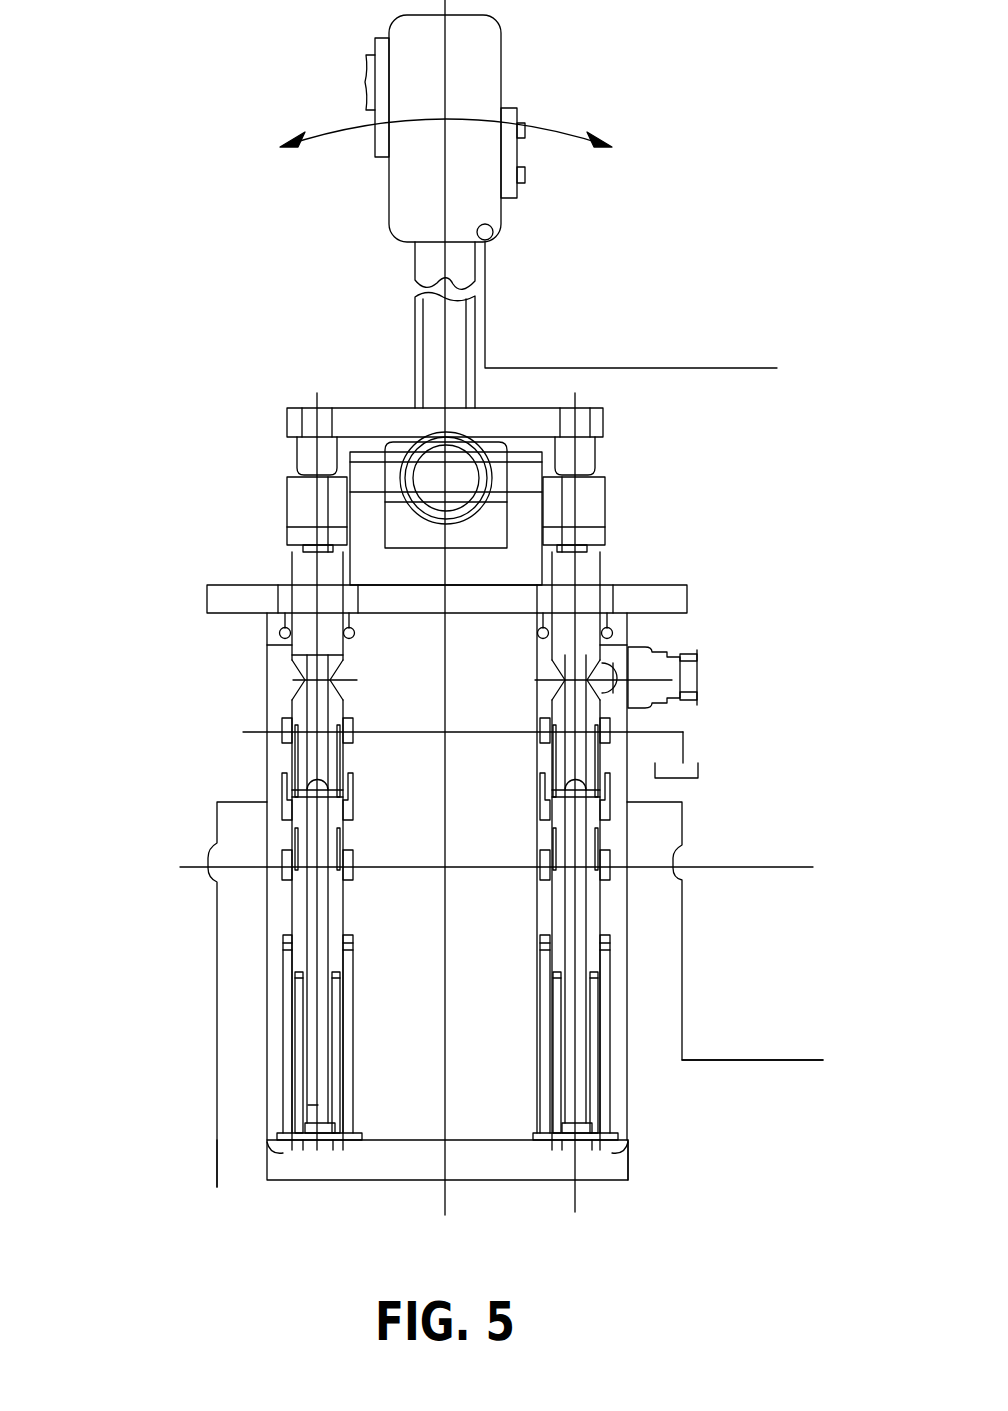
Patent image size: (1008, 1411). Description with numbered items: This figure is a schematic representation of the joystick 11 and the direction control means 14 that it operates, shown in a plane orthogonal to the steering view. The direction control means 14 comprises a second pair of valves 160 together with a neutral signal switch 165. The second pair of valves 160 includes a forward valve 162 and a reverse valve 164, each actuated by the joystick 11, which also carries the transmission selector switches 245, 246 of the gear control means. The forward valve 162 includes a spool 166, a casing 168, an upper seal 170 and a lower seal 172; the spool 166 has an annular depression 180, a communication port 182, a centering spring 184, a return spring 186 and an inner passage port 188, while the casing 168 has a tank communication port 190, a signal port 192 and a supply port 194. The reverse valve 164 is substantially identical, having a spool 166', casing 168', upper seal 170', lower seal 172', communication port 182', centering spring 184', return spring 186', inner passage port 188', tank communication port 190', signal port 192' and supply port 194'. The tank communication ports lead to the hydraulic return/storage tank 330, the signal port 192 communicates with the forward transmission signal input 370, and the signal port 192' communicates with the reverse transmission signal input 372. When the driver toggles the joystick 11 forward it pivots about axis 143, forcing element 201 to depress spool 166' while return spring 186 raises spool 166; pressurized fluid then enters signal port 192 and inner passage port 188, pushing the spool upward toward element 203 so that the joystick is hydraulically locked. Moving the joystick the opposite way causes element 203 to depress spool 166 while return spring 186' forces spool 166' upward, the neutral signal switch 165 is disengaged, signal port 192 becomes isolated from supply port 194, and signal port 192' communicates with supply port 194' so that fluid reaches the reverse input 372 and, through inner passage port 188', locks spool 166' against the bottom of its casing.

The joystick 11 is at (487, 328).
The direction control means 14 is at (238, 412).
The axis 143 is at (433, 440).
The second pair of valves 160 is at (230, 512).
The forward valve 162 is at (290, 567).
The reverse valve 164 is at (603, 565).
The neutral signal switch 165 is at (698, 655).
The spool 166 is at (248, 675).
The spool 166' is at (700, 691).
The casing 168 is at (218, 615).
The casing 168' is at (680, 597).
The upper seal 170 is at (221, 643).
The upper seal 170' is at (676, 618).
The lower seal 172 is at (387, 1155).
The lower seal 172' is at (690, 1163).
The annular depression 180 is at (297, 682).
The communication port 182 is at (202, 994).
The communication port 182' is at (725, 931).
The centering spring 184 is at (235, 1034).
The centering spring 184' is at (676, 1031).
The return spring 186 is at (230, 1052).
The return spring 186' is at (689, 1051).
The inner passage port 188 is at (240, 1112).
The inner passage port 188' is at (658, 1081).
The tank communication port 190 is at (393, 731).
The tank communication port 190' is at (690, 740).
The signal port 192 is at (235, 772).
The signal port 192' is at (675, 772).
The supply port 194 is at (468, 868).
The supply port 194' is at (693, 870).
The element 201 is at (598, 462).
The element 203 is at (295, 462).
The switch 245 is at (528, 127).
The switch 246 is at (527, 182).
The hydraulic return/storage tank 330 is at (700, 768).
The forward transmission signal input 370 is at (217, 1168).
The reverse transmission signal input 372 is at (803, 1060).